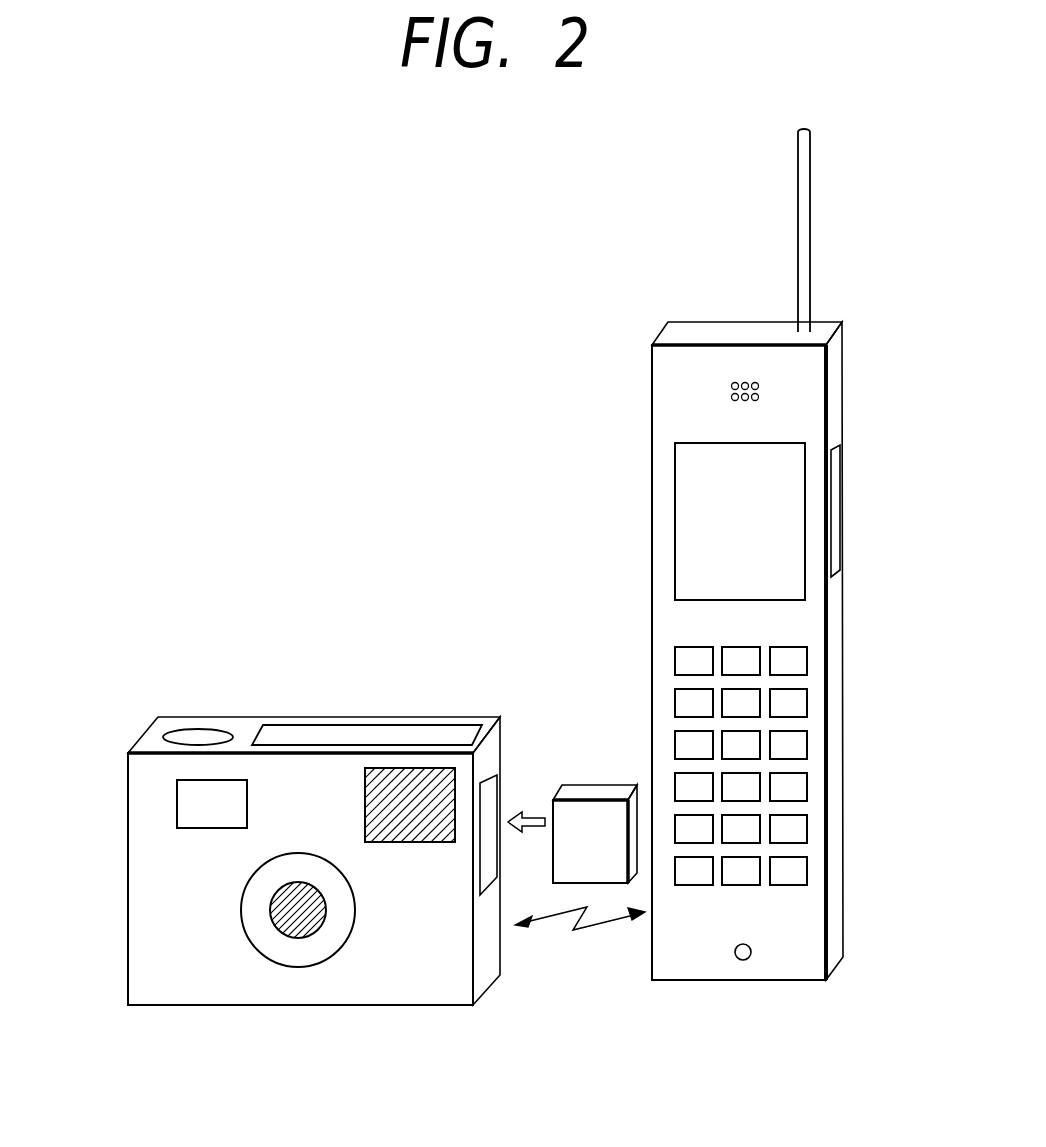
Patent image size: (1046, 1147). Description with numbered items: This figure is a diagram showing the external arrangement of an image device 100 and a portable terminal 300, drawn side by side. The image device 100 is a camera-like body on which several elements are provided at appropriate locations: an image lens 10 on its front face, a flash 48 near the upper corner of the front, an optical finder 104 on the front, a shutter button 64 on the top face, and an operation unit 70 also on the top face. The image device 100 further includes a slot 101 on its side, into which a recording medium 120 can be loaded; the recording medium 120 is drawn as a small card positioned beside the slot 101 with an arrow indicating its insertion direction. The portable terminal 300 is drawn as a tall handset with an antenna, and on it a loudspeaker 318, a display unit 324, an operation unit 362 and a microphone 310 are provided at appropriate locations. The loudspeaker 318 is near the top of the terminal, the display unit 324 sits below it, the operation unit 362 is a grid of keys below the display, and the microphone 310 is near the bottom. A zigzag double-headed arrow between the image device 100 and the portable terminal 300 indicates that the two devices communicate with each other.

The image device 100 is at (185, 1007).
The shutter button 64 is at (212, 728).
The operation unit 70 is at (414, 722).
The optical finder 104 is at (177, 793).
The flash 48 is at (400, 820).
The image lens 10 is at (295, 927).
The slot 101 is at (497, 790).
The recording medium 120 is at (605, 785).
The portable terminal 300 is at (652, 382).
The loudspeaker 318 is at (741, 380).
The display unit 324 is at (675, 478).
The operation unit 362 is at (860, 890).
The microphone 310 is at (743, 960).